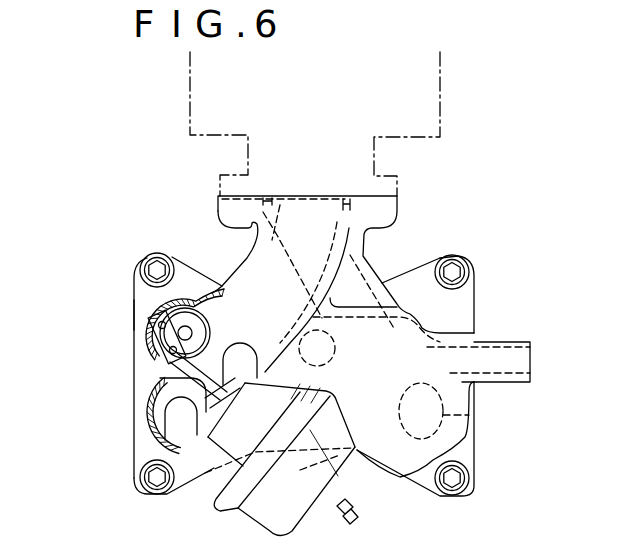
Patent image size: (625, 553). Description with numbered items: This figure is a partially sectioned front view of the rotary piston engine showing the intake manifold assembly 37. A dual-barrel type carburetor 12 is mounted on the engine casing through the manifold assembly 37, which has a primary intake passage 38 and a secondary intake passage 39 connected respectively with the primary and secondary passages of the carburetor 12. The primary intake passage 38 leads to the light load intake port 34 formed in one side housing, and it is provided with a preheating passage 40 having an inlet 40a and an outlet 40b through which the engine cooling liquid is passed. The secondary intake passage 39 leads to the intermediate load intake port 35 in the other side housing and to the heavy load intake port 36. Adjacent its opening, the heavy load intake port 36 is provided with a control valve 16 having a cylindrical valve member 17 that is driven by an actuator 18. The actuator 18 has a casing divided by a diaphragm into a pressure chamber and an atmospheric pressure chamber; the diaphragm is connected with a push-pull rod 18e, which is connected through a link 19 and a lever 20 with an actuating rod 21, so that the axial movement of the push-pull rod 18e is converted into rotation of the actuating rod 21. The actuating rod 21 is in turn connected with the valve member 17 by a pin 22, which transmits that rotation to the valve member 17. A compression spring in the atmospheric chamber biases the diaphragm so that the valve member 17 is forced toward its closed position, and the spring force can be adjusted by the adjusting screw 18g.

The dual-barrel type carburetor 12 is at (188, 112).
The control valve 16 is at (131, 319).
The cylindrical valve member 17 is at (210, 307).
The actuator 18 is at (244, 511).
The push-pull rod 18e is at (158, 378).
The adjusting screw 18g is at (352, 524).
The link 19 is at (161, 351).
The lever 20 is at (150, 302).
The actuating rod 21 is at (152, 343).
The pin 22 is at (204, 333).
The light load intake port 34 is at (474, 416).
The intermediate load intake port 35 is at (150, 420).
The heavy load intake port 36 is at (187, 314).
The manifold assembly 37 is at (478, 271).
The primary intake passage 38 is at (352, 291).
The secondary intake passage 39 is at (258, 270).
The preheating passage 40 is at (377, 440).
The inlet 40a is at (514, 340).
The outlet 40b is at (345, 368).